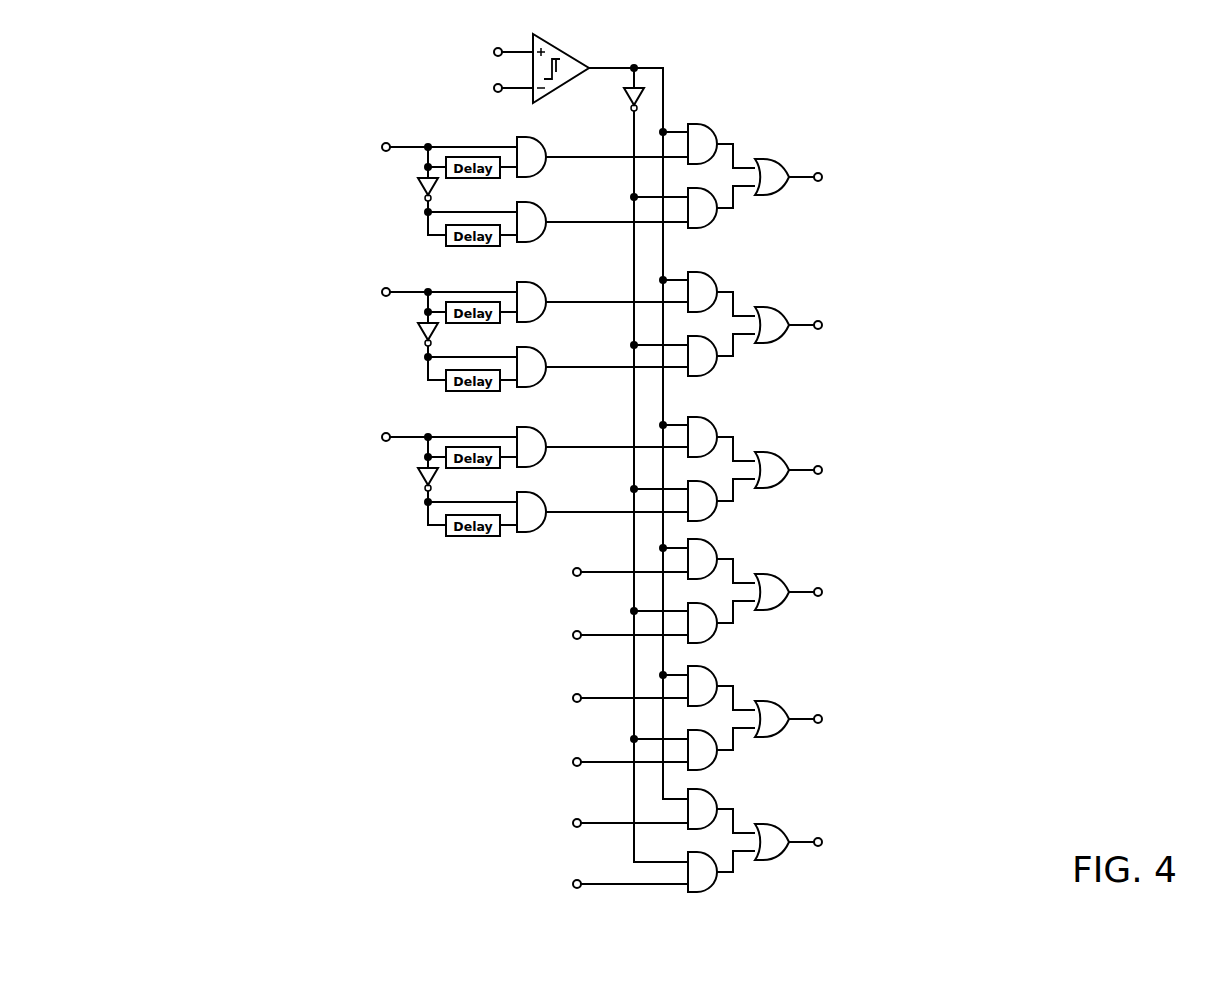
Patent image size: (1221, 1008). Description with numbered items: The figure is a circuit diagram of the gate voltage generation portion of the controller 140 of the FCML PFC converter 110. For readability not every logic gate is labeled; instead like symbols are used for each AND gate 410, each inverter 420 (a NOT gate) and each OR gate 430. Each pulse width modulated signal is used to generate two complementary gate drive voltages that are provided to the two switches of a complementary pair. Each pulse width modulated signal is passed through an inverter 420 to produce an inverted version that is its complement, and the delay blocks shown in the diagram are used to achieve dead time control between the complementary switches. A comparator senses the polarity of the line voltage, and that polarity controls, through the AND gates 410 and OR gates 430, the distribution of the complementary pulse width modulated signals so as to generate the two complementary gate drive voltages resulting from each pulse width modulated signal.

The FCML PFC converter 110 is at (155, 108).
The controller 140 is at (213, 186).
The AND gate 410 is at (715, 272).
The inverter 420 is at (410, 493).
The OR gate 430 is at (782, 346).